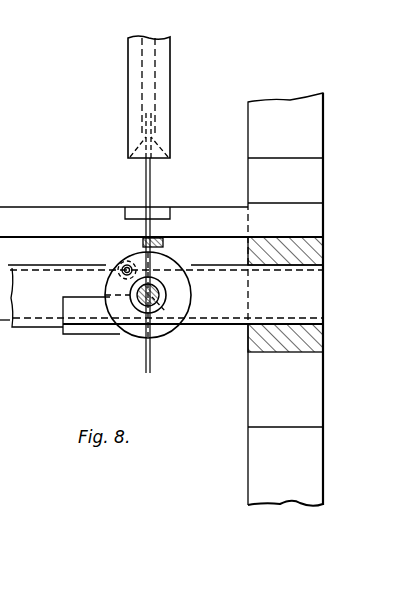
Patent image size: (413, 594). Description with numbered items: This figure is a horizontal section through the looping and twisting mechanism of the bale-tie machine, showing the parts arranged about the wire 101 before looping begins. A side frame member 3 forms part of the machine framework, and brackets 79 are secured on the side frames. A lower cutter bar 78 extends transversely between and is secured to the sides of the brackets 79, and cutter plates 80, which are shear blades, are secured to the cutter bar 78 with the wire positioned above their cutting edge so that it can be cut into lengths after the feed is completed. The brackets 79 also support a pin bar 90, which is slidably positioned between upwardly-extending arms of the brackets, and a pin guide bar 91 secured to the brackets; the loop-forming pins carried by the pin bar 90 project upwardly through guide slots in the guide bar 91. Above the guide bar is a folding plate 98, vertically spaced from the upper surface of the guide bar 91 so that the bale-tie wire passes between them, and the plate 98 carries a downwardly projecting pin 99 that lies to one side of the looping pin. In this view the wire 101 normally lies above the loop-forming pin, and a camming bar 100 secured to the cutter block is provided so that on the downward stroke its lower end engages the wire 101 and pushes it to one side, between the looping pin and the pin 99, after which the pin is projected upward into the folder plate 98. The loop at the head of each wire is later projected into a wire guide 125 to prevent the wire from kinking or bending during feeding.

The side frame member 3 is at (257, 467).
The lower cutter bar 78 is at (68, 213).
The bracket 79 is at (257, 387).
The cutter plate 80 is at (133, 206).
The pin bar 90 is at (35, 307).
The pin guide bar 91 is at (34, 336).
The folding plate 98 is at (180, 290).
The pin 99 is at (122, 263).
The camming bar 100 is at (164, 247).
The wire 101 is at (145, 367).
The wire guide 125 is at (128, 113).